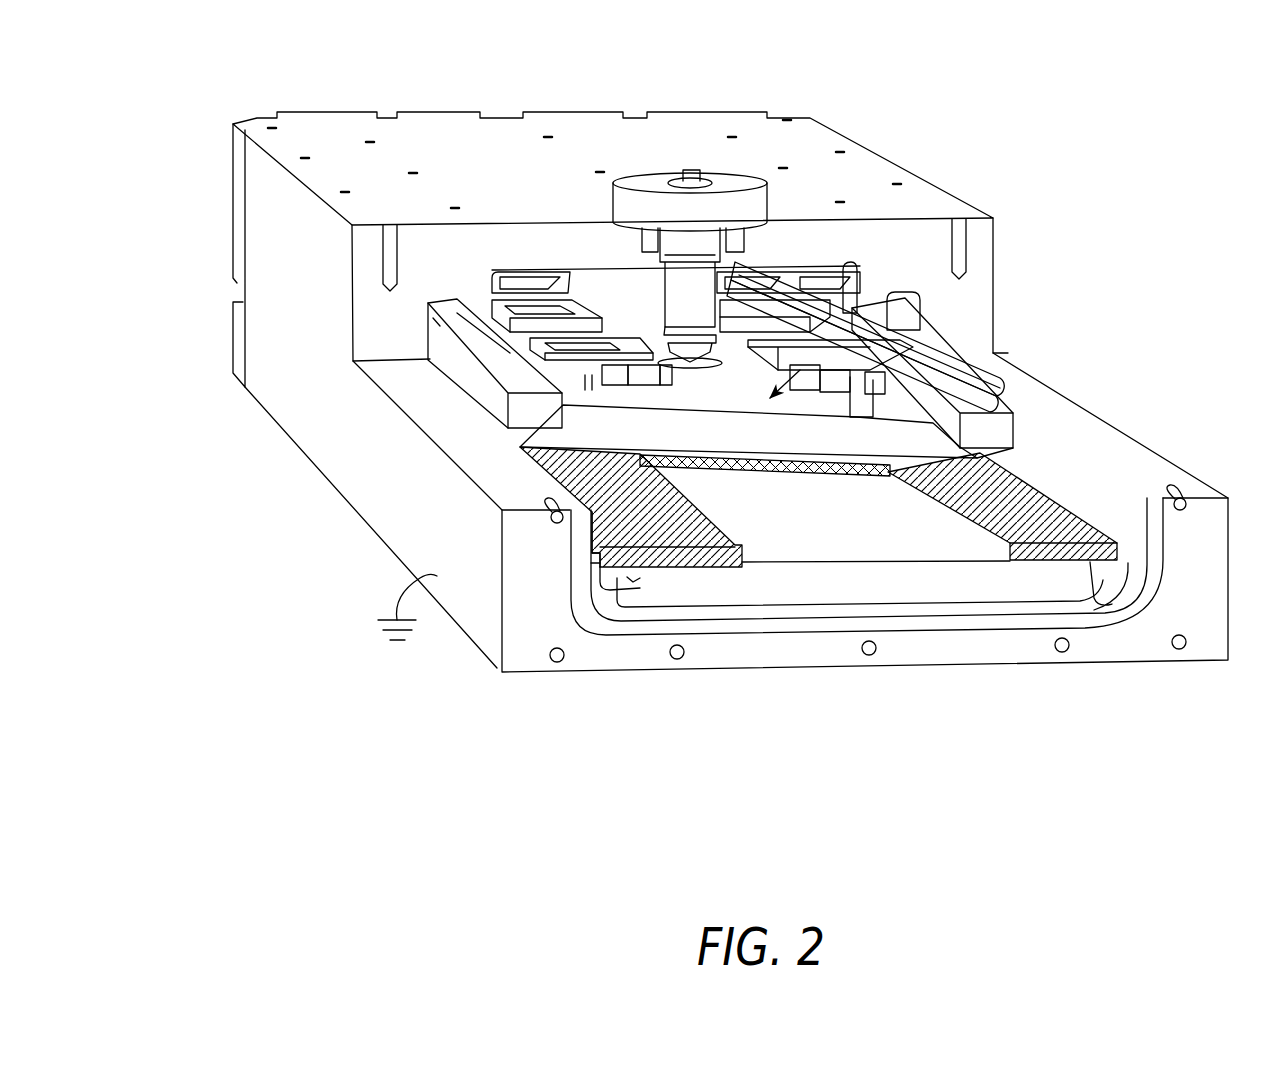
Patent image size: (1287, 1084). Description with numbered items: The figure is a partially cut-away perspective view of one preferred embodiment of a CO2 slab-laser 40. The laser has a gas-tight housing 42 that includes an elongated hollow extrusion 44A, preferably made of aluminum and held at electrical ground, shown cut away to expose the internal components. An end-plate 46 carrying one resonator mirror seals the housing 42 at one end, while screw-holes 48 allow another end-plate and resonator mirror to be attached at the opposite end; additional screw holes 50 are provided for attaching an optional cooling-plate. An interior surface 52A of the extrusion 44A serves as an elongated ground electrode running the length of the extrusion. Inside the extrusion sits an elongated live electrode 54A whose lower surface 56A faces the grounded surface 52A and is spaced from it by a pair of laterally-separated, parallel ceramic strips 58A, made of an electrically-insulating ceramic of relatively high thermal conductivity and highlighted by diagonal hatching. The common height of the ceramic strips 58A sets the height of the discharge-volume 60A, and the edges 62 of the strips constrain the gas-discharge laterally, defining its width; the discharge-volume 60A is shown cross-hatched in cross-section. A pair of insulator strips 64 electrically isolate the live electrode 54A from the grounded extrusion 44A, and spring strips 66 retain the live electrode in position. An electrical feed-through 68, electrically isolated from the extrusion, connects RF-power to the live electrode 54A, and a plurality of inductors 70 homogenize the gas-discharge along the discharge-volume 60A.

The CO2 slab-laser 40 is at (272, 714).
The gas-tight housing 42 is at (1000, 170).
The elongated hollow extrusion 44A is at (294, 384).
The end-plate 46 is at (230, 131).
The screw-holes 48 is at (555, 664).
The screw holes 50 is at (372, 140).
The interior surface 52A is at (902, 545).
The live electrode 54A is at (882, 330).
The lower surface 56A is at (905, 398).
The ceramic strips 58A is at (643, 568).
The discharge-volume 60A is at (795, 465).
The edges 62 is at (737, 470).
The insulator strips 64 is at (487, 392).
The spring strips 66 is at (470, 305).
The electrical feed-through 68 is at (696, 168).
The inductors 70 is at (580, 298).